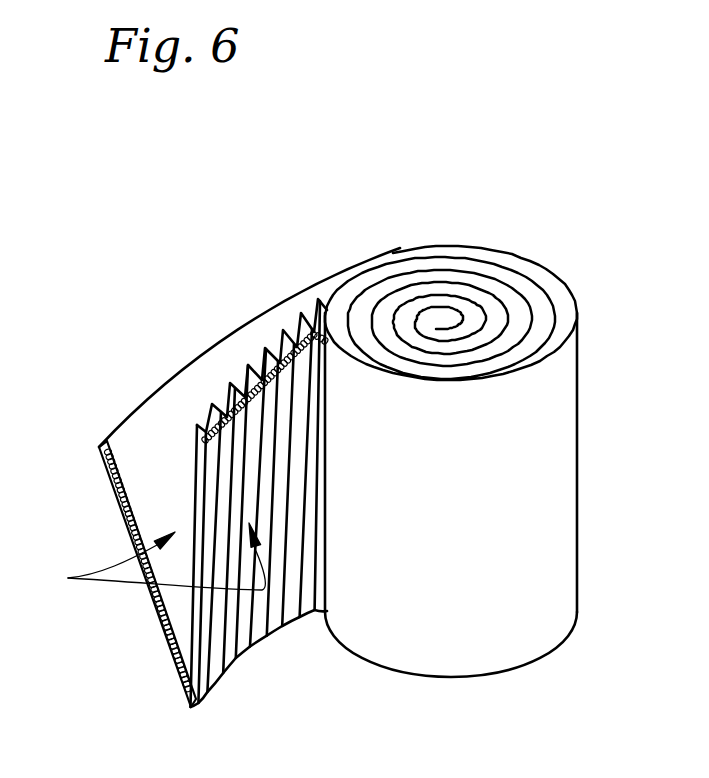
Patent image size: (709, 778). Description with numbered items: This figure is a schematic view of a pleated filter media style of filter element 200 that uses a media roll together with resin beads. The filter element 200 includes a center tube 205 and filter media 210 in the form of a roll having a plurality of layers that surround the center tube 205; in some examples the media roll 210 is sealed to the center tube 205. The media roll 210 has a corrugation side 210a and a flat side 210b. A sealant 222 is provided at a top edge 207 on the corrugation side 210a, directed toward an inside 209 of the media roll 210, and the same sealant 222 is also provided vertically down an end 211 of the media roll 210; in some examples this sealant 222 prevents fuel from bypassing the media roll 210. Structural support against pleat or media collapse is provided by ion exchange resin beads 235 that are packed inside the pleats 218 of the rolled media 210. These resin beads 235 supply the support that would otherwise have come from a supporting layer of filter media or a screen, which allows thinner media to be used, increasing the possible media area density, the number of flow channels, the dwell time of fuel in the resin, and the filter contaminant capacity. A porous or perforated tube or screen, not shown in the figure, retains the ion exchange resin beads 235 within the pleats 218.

The filter element 200 is at (531, 161).
The center tube 205 is at (443, 317).
The top edge 207 is at (225, 404).
The inside of the media roll 209 is at (286, 402).
The media roll 210 is at (548, 470).
The corrugation side 210a is at (244, 400).
The flat side 210b is at (137, 410).
The end of the media roll 211 is at (155, 604).
The pleats 218 is at (278, 345).
The sealant 222 is at (226, 472).
The ion exchange resin beads 235 is at (141, 558).